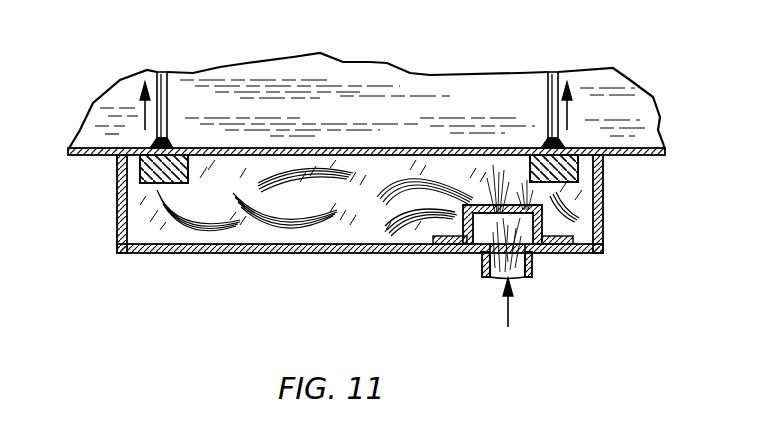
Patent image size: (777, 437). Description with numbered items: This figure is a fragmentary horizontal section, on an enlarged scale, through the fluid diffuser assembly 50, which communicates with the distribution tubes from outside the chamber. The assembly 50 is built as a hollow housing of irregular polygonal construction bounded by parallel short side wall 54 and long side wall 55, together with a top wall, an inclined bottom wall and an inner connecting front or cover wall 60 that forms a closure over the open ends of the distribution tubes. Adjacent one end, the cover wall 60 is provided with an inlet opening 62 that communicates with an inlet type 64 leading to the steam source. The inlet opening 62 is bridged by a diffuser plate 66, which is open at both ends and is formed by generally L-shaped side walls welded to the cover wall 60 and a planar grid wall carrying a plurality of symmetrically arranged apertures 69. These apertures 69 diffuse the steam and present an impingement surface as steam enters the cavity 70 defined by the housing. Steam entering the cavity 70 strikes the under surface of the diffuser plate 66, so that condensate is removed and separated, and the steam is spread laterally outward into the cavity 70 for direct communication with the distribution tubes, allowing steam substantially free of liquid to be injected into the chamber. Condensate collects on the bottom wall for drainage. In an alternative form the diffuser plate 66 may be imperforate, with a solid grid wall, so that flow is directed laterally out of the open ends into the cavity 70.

The fluid diffuser assembly 50 is at (356, 229).
The short side wall 54 is at (116, 212).
The long side wall 55 is at (604, 197).
The cover wall 60 is at (296, 254).
The inlet opening 62 is at (533, 268).
The inlet type 64 is at (517, 272).
The diffuser plate 66 is at (414, 225).
The apertures 69 is at (466, 253).
The cavity 70 is at (349, 200).